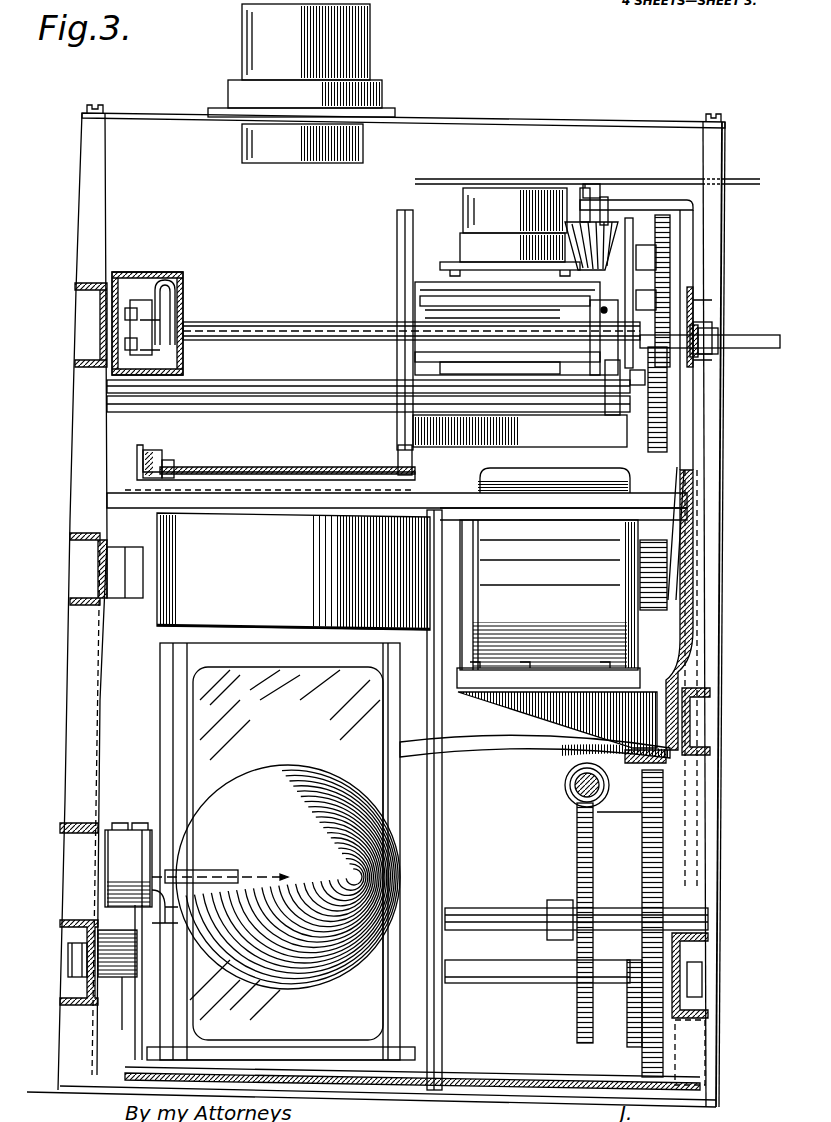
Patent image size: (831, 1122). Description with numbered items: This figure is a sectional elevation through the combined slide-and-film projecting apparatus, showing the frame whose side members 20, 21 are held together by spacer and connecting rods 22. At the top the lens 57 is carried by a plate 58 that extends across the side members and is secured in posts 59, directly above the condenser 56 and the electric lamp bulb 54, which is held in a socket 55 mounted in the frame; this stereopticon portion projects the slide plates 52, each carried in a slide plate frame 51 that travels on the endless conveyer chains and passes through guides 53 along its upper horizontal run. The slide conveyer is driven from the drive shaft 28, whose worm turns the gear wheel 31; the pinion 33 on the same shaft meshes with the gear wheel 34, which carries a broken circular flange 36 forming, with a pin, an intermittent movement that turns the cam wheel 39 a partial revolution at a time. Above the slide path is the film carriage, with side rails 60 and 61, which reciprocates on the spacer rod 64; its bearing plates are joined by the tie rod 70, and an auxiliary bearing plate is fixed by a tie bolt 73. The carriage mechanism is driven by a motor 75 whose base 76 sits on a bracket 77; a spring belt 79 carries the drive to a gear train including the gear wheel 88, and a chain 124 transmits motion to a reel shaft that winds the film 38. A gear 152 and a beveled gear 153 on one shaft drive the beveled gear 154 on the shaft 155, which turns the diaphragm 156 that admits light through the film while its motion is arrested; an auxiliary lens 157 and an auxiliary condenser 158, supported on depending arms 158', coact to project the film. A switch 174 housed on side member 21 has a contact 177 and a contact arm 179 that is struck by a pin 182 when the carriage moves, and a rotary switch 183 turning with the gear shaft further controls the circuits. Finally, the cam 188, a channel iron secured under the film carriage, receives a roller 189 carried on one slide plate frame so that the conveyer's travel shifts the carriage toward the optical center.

The side member 20 is at (711, 699).
The side member 21 is at (87, 608).
The spacer and connecting rods 22 is at (335, 412).
The drive shaft 28 is at (574, 796).
The gear wheel 31 is at (577, 868).
The pinion 33 is at (700, 926).
The gear wheel 34 is at (642, 1076).
The broken circular flange 36 is at (665, 876).
The film 38 is at (507, 329).
The cam wheel 39 is at (622, 1036).
The slide plate frame 51 is at (176, 476).
The slide plate 52 is at (250, 470).
The guides 53 is at (148, 450).
The electric lamp bulb 54 is at (276, 877).
The socket 55 is at (142, 798).
The condenser 56 is at (293, 571).
The knob 57 is at (252, 59).
The plate 58 is at (575, 123).
The posts 59 is at (108, 246).
The side rail 60 is at (606, 397).
The side rail 61 is at (368, 377).
The spacer rod 64 is at (338, 321).
The tie rod 70 is at (552, 346).
The tie bolt 73 is at (680, 337).
The motor 75 is at (549, 569).
The base 76 is at (641, 672).
The bracket 77 is at (557, 720).
The spring belt 79 is at (680, 548).
The gear wheel 88 is at (692, 372).
The chain 124 is at (667, 388).
The gear 152 is at (673, 226).
The beveled gear 153 is at (670, 271).
The beveled gear 154 is at (602, 232).
The shaft 155 is at (598, 200).
The diaphragm 156 is at (512, 177).
The auxiliary lens 157 is at (548, 214).
The auxiliary condenser 158 is at (535, 767).
The depending arms 158' is at (700, 486).
The switch 174 is at (176, 296).
The contact 177 is at (162, 350).
The contact arm 179 is at (188, 286).
The pin 182 is at (398, 356).
The bracket 183 is at (122, 985).
The cam 188 is at (520, 432).
The roller 189 is at (398, 460).